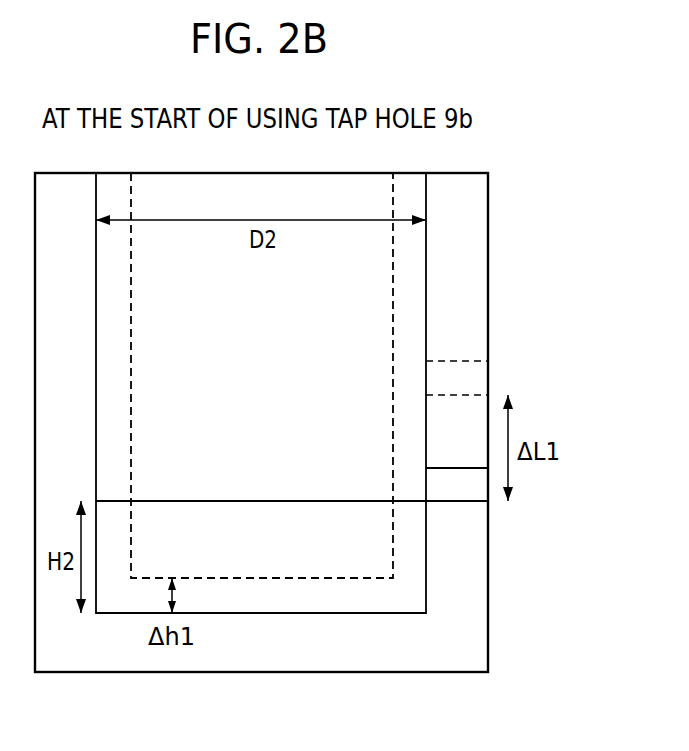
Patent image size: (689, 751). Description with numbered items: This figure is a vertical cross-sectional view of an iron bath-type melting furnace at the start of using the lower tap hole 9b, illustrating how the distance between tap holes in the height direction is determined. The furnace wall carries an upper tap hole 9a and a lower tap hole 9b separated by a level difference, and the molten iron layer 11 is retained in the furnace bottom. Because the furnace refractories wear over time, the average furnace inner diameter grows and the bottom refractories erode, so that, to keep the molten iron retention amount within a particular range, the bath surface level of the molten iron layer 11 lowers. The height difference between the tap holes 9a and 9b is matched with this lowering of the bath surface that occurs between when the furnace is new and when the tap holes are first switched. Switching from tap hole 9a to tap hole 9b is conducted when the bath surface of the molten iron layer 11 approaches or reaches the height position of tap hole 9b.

The tap hole 9a is at (488, 380).
The tap hole 9b is at (488, 490).
The molten iron layer 11 is at (268, 550).